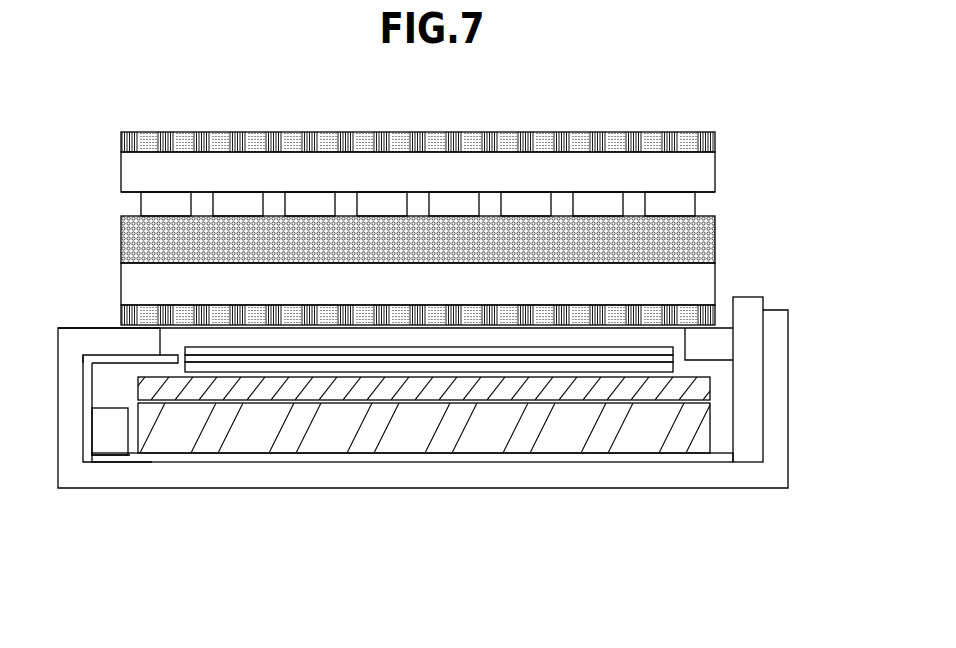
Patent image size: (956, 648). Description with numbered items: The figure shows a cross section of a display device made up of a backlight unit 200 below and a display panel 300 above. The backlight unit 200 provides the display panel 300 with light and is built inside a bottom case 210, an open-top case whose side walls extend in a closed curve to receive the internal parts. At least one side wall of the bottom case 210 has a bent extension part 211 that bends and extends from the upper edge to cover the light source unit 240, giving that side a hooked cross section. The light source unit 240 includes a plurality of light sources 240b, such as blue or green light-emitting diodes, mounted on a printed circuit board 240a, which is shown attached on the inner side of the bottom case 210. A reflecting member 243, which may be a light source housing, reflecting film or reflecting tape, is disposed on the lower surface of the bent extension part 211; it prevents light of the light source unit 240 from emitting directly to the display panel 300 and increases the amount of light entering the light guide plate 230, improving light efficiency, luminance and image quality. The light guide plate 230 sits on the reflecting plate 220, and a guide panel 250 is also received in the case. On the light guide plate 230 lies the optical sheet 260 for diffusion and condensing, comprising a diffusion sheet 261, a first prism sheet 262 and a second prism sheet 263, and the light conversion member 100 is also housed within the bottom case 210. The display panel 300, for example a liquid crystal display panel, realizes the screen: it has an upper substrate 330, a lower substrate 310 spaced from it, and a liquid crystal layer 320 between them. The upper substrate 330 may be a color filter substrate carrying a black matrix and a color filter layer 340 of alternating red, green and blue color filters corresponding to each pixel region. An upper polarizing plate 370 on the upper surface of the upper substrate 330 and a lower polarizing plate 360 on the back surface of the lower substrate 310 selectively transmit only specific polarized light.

The light conversion member 100 is at (573, 392).
The backlight unit 200 is at (449, 406).
The bottom case 210 is at (648, 482).
The bent extension part 211 is at (70, 314).
The reflecting plate 220 is at (275, 462).
The light guide plate 230 is at (392, 433).
The light source unit 240 is at (118, 470).
The printed circuit board 240a is at (92, 465).
The light sources 240b is at (118, 448).
The reflecting member 243 is at (100, 355).
The guide panel 250 is at (748, 453).
The optical sheet 260 is at (429, 466).
The diffusion sheet 261 is at (452, 352).
The first prism sheet 262 is at (478, 358).
The second prism sheet 263 is at (517, 350).
The display panel 300 is at (477, 226).
The lower substrate 310 is at (713, 268).
The liquid crystal layer 320 is at (715, 227).
The upper substrate 330 is at (713, 168).
The color filter layer 340 is at (690, 201).
The lower polarizing plate 360 is at (447, 297).
The upper polarizing plate 370 is at (715, 137).